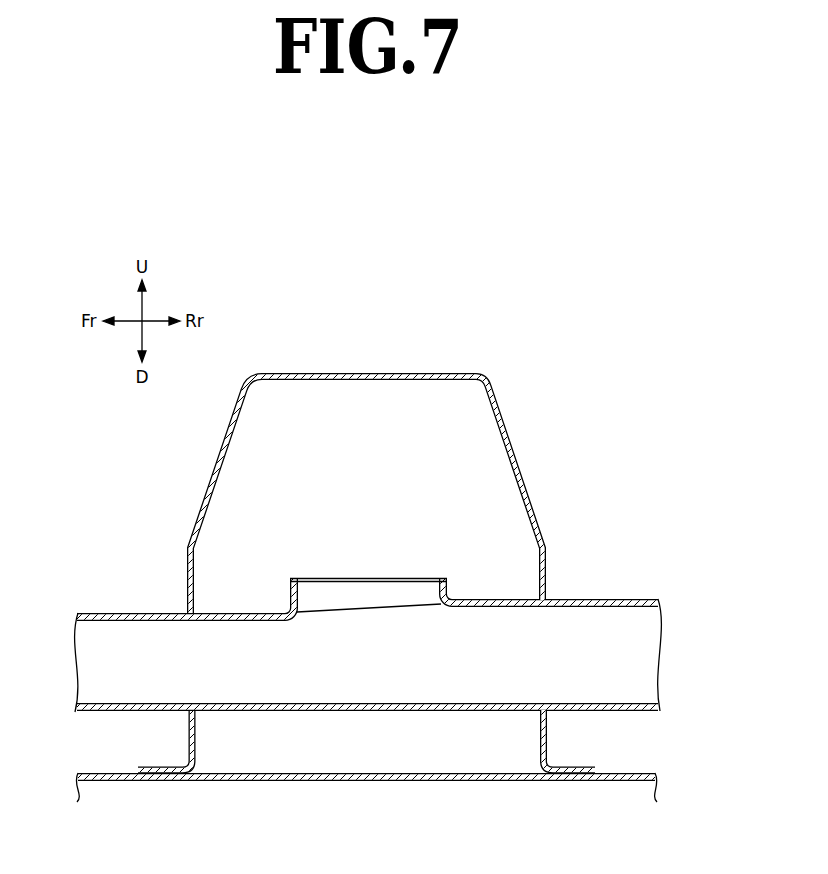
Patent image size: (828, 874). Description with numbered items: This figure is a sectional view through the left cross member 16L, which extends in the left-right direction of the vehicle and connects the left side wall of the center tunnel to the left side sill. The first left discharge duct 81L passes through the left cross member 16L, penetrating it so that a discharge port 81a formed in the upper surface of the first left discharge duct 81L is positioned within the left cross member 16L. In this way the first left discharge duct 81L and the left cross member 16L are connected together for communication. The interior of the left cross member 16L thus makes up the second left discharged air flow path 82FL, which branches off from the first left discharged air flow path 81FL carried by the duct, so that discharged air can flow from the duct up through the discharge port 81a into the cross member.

The left cross member 16L is at (365, 373).
The second left discharged air flow path 82FL is at (462, 475).
The discharge port 81a is at (407, 578).
The first left discharge duct 81L is at (108, 613).
The first left discharged air flow path 81FL is at (123, 672).